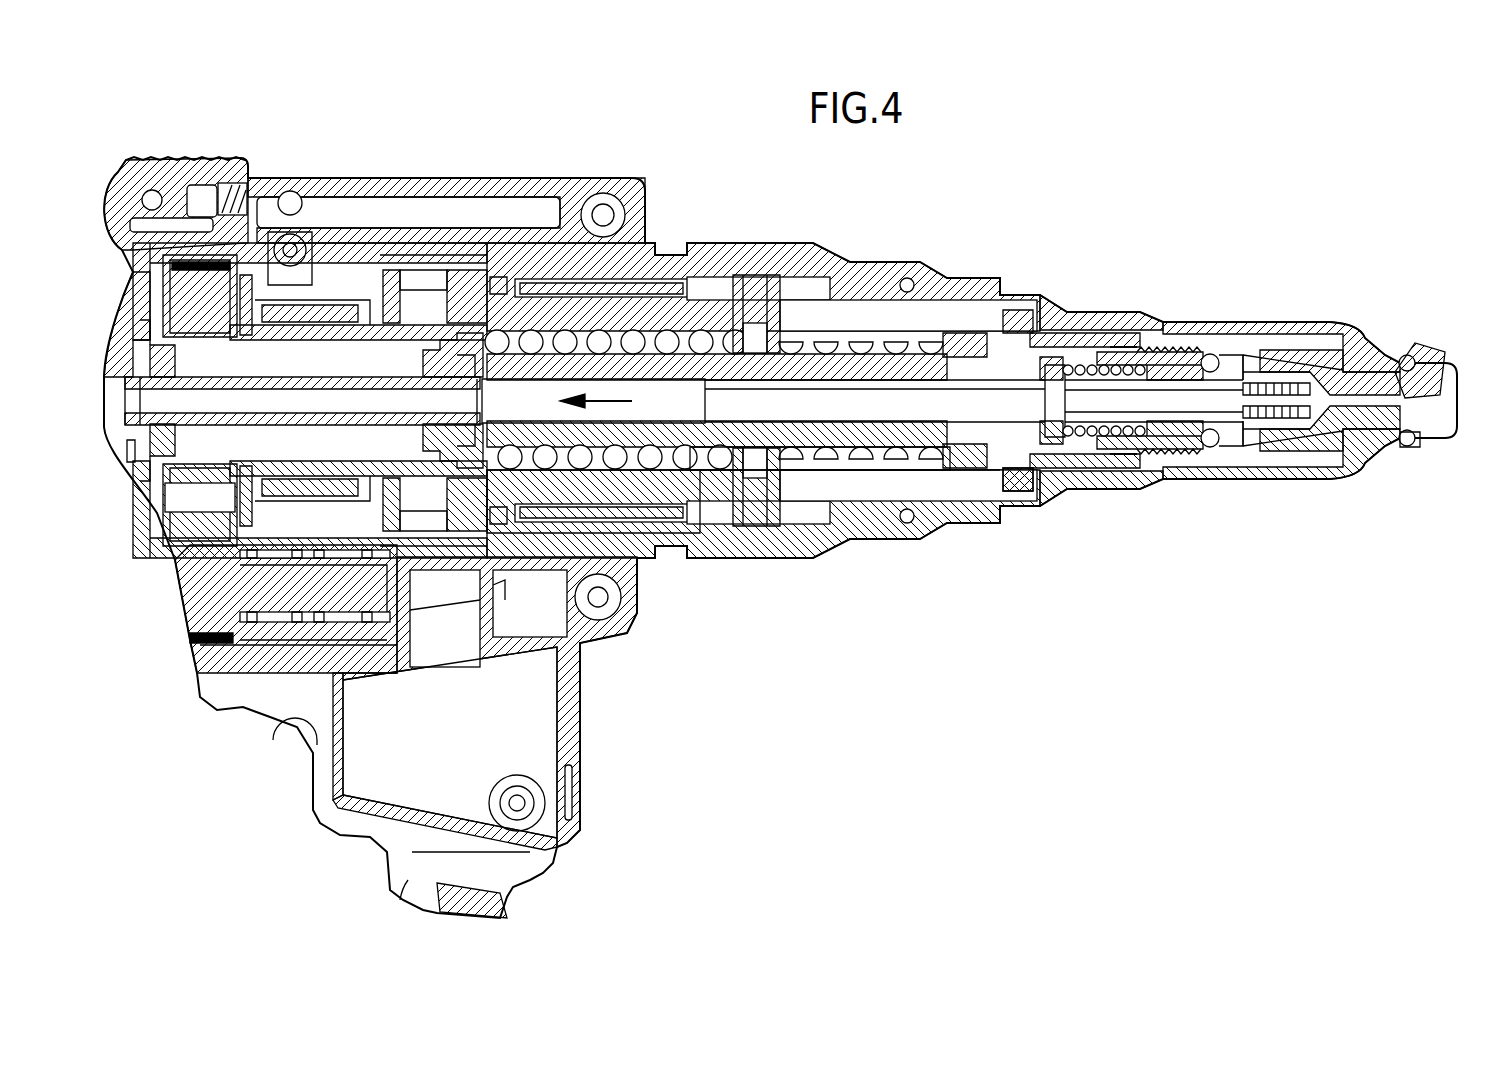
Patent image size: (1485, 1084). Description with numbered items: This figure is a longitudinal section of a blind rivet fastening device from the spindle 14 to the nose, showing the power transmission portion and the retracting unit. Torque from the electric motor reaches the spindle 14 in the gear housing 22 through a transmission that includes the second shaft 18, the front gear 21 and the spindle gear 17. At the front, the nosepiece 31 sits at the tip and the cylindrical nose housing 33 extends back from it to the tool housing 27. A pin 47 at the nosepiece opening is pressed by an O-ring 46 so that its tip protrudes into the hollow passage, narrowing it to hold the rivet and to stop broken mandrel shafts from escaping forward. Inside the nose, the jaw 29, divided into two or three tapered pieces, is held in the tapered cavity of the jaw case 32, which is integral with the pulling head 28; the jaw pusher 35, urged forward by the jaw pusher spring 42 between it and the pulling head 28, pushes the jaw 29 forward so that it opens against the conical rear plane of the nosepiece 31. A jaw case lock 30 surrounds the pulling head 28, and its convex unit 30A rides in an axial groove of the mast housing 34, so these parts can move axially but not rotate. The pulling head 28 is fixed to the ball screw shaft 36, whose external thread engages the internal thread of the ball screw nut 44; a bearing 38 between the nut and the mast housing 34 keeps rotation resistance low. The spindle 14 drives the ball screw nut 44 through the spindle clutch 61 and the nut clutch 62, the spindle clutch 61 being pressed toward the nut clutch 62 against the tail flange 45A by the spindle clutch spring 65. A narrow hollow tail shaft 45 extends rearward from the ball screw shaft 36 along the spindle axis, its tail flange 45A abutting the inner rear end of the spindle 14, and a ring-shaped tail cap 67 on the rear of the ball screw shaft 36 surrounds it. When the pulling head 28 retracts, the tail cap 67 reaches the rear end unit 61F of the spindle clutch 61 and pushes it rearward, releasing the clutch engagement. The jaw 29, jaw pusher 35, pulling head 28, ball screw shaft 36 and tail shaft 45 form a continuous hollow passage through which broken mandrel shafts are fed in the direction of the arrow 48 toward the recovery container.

The spindle 14 is at (323, 327).
The spindle gear 17 is at (180, 277).
The second shaft 18 is at (230, 590).
The front gear 21 is at (197, 550).
The gear housing 22 is at (263, 650).
The tool housing 27 is at (638, 225).
The pulling head 28 is at (1170, 350).
The jaw 29 is at (1293, 423).
The jaw case lock 30 is at (1115, 330).
The convex unit 30A is at (1000, 310).
The nosepiece 31 is at (1377, 368).
The jaw case 32 is at (1320, 345).
The nose housing 33 is at (1045, 495).
The mast housing 34 is at (850, 470).
The jaw pusher 35 is at (1227, 427).
The ball screw shaft 36 is at (887, 367).
The bearing 38 is at (745, 300).
The jaw pusher spring 42 is at (1130, 440).
The ball screw nut 44 is at (703, 487).
The tail shaft 45 is at (407, 365).
The tail flange 45A is at (168, 360).
The O-ring 46 is at (1403, 355).
The pin 47 is at (1438, 368).
The arrow 48 is at (627, 440).
The spindle clutch 61 is at (470, 282).
The rear end unit of the spindle clutch 61F is at (273, 325).
The nut clutch 62 is at (493, 547).
The spindle clutch spring 65 is at (215, 300).
The tail cap 67 is at (455, 263).